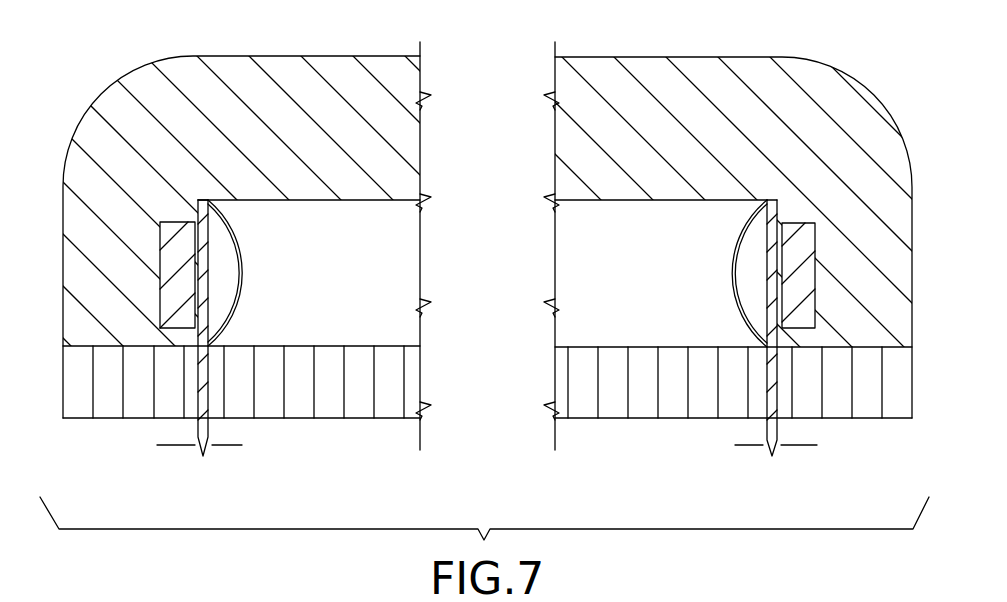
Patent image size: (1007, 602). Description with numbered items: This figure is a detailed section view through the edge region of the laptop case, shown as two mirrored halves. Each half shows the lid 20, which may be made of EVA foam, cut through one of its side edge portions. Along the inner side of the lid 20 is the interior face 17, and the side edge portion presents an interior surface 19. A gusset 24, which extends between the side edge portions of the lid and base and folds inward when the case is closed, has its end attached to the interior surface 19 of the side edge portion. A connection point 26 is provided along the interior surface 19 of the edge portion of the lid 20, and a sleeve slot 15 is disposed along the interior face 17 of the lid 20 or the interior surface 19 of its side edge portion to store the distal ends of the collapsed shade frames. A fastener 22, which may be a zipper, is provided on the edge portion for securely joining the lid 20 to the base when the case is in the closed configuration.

The sleeve slot 15 is at (242, 285).
The interior face 17 is at (401, 200).
The interior surface 19 is at (197, 200).
The lid 20 is at (338, 65).
The fastener 22 is at (120, 408).
The gusset 24 is at (205, 432).
The connection point 26 is at (168, 275).